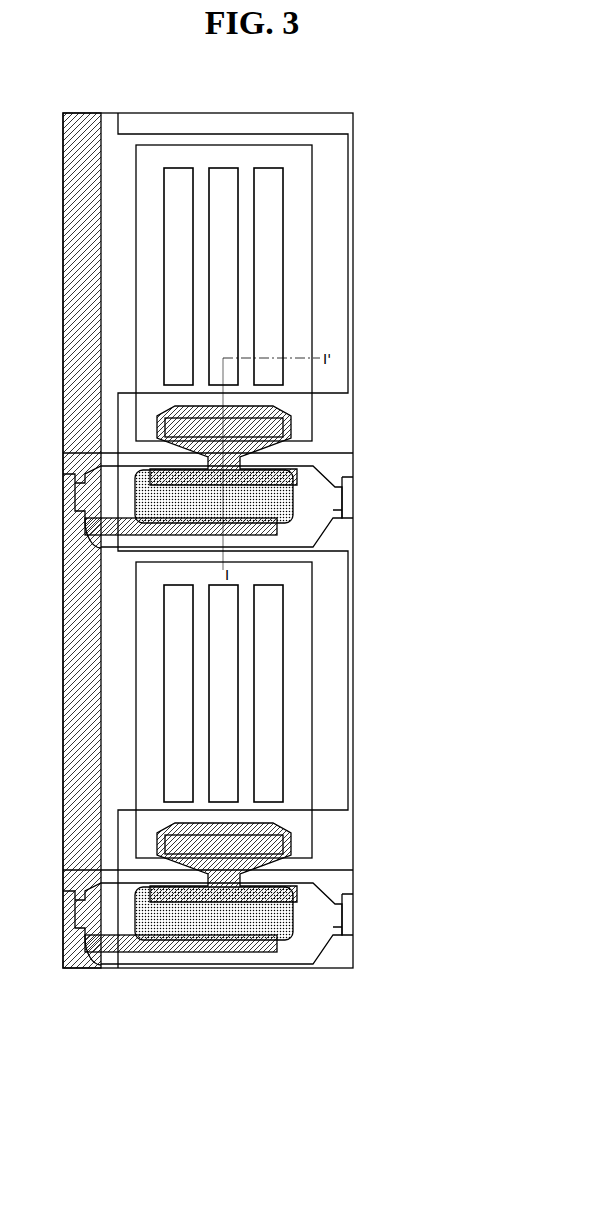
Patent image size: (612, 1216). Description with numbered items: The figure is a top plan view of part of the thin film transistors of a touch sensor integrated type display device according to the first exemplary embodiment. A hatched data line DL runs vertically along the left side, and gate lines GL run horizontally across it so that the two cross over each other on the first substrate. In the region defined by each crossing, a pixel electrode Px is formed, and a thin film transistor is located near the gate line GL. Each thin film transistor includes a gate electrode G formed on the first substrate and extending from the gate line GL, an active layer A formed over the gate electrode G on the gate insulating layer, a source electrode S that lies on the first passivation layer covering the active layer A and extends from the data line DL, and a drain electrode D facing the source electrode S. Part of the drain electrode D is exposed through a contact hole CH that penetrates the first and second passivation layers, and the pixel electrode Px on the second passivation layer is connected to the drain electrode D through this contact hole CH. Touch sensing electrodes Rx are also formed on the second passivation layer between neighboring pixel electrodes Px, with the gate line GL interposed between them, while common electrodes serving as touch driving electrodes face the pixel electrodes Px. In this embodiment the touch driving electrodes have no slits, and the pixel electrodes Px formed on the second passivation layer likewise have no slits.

The data line DL is at (80, 122).
The pixel electrode Px is at (312, 208).
The contact hole CH is at (300, 416).
The drain electrode D is at (292, 428).
The gate electrode G is at (320, 472).
The touch sensing electrode Rx is at (347, 463).
The gate line GL is at (348, 498).
The active layer A is at (297, 503).
The source electrode S is at (278, 528).